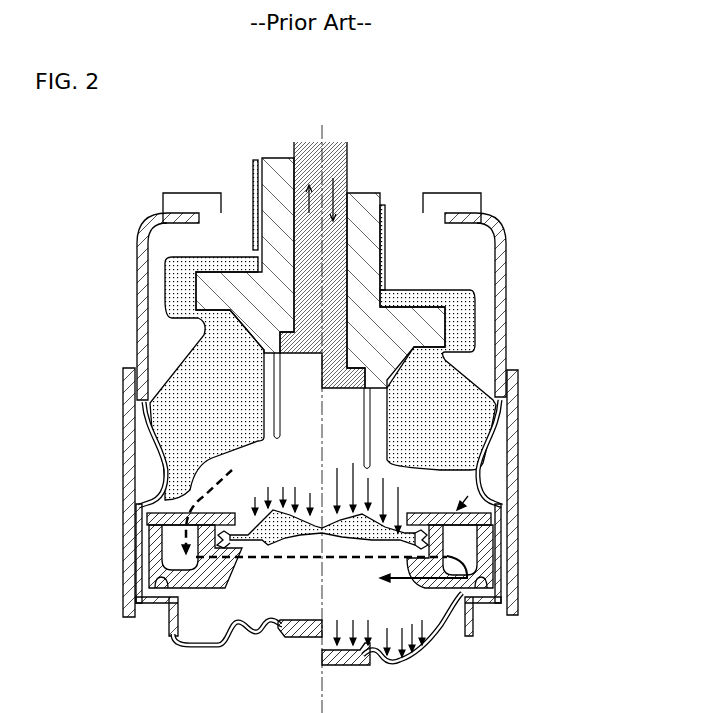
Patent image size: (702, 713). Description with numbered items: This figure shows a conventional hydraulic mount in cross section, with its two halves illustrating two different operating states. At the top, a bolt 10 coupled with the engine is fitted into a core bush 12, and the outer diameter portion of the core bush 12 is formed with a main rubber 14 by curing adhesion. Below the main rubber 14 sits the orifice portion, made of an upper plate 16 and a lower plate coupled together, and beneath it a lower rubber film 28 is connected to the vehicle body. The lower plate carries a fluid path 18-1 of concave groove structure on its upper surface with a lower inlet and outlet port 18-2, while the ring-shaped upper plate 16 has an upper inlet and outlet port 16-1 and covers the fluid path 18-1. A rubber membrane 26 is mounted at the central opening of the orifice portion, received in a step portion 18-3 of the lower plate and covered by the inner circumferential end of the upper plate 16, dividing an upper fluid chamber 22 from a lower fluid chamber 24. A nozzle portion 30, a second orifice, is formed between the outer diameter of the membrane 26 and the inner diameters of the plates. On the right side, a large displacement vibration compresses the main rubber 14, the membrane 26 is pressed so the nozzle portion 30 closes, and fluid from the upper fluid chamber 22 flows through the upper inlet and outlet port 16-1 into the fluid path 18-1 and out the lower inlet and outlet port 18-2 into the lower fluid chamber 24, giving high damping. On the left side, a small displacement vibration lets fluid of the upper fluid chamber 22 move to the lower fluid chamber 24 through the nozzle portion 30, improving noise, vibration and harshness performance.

The bolt 10 is at (347, 150).
The core bush 12 is at (368, 195).
The main rubber 14 is at (450, 390).
The upper plate 16 is at (473, 485).
The upper inlet and outlet port 16-1 is at (170, 492).
The fluid path 18-1 is at (475, 548).
The lower inlet and outlet port 18-2 is at (466, 572).
The step portion 18-3 is at (200, 646).
The upper fluid chamber 22 is at (205, 472).
The lower fluid chamber 24 is at (253, 605).
The membrane 26 is at (300, 517).
The lower rubber film 28 is at (292, 638).
The nozzle portion 30 is at (224, 517).